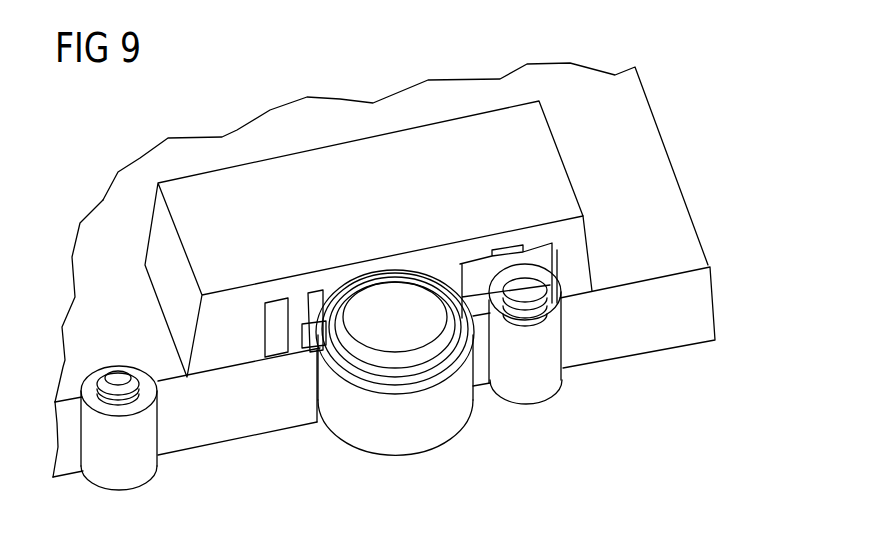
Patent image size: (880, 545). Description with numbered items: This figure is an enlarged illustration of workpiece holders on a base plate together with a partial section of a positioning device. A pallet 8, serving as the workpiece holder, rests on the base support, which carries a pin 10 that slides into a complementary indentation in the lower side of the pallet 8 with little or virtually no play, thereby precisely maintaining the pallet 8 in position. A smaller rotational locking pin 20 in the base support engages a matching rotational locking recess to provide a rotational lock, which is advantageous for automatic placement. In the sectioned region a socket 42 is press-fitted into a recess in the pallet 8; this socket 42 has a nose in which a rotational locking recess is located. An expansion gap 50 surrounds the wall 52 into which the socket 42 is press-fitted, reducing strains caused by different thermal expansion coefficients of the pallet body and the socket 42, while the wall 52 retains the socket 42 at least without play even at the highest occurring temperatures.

The pallet 8 is at (207, 187).
The pin 10 is at (430, 427).
The rotational locking pin 20 is at (556, 383).
The socket 42 is at (500, 390).
The expansion gap 50 is at (277, 354).
The wall 52 is at (319, 353).